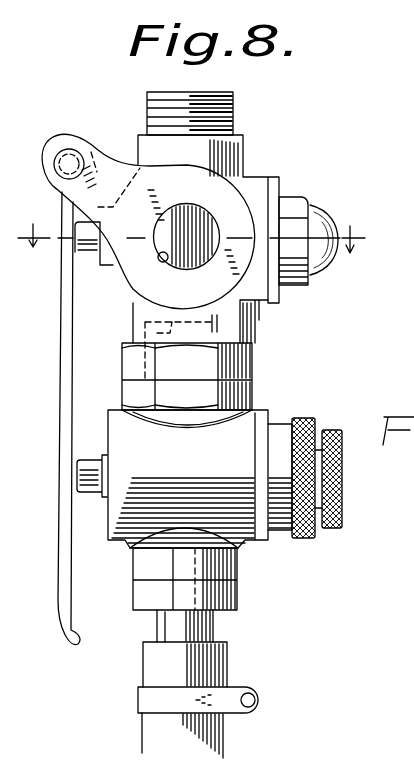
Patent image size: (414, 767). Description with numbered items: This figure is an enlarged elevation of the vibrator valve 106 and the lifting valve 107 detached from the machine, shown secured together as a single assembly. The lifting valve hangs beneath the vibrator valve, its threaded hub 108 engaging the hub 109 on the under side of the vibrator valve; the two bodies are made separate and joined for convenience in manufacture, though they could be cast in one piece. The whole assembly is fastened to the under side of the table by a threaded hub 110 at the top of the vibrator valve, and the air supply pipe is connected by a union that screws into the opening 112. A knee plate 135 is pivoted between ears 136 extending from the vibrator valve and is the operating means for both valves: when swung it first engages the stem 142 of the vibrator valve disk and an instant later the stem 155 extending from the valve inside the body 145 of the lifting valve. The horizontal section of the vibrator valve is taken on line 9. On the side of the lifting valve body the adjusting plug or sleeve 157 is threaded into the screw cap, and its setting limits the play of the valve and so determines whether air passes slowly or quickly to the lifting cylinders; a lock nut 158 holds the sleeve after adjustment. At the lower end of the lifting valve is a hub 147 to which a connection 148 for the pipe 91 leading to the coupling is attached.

The vibrator valve 106 is at (148, 201).
The ears 136 is at (78, 140).
The threaded hub 110 is at (232, 126).
The opening 112 is at (172, 264).
The stem 142 is at (90, 254).
The knee plate 135 is at (85, 368).
The section line 9- 9 is at (199, 238).
The threaded hub 108 is at (142, 335).
The hub 109 is at (245, 358).
The body of the lifting valve 145 is at (188, 479).
The lifting valve 107 is at (165, 559).
The stem 155 is at (94, 484).
The adjusting plug or sleeve 157 is at (342, 506).
The lock nut 158 is at (315, 538).
The hub 147 is at (240, 567).
The connection 148 is at (222, 605).
The pipe 91 is at (150, 722).